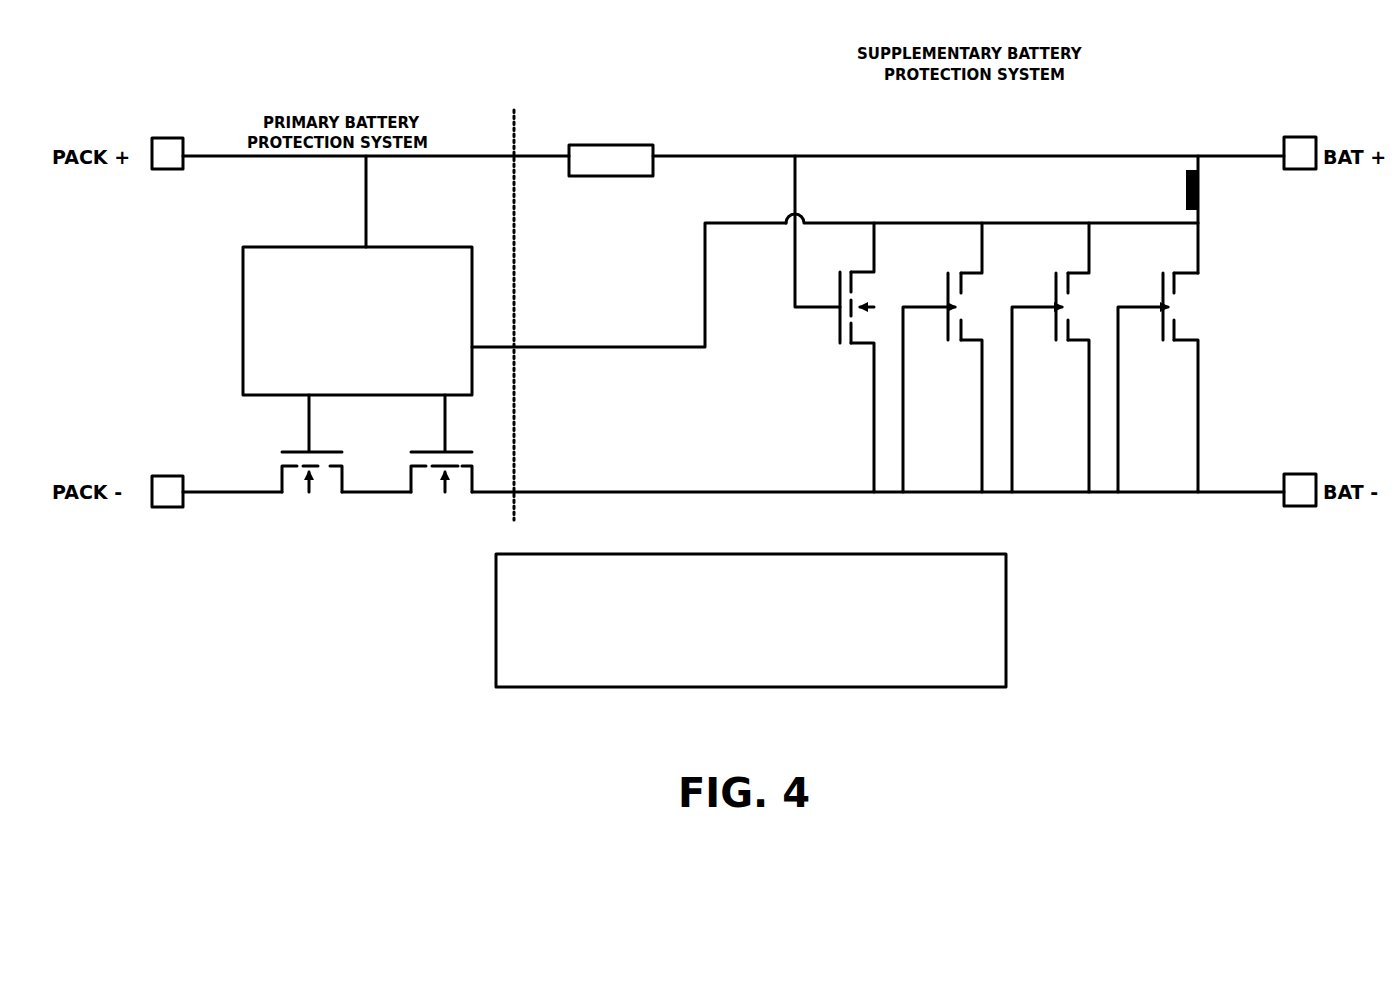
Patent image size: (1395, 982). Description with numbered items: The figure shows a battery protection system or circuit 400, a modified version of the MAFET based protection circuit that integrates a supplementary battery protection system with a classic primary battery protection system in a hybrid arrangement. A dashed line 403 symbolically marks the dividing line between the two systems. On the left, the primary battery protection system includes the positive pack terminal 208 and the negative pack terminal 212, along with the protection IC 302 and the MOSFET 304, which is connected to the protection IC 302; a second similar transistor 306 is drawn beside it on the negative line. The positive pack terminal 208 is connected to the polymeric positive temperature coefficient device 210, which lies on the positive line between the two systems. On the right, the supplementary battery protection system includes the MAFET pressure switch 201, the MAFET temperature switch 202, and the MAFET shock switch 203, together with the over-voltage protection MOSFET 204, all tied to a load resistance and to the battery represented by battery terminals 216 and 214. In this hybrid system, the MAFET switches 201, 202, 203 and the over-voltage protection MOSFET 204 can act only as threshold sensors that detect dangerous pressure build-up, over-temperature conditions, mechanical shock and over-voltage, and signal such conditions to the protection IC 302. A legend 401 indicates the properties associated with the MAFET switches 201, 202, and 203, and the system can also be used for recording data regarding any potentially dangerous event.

The battery protection system or circuit 400 is at (176, 80).
The dashed line 403 is at (515, 128).
The positive pack terminal 208 is at (172, 168).
The negative pack terminal 212 is at (166, 470).
The battery terminal 216 is at (1290, 168).
The battery terminal 214 is at (1291, 470).
The polymeric positive temperature coefficient (PPTC) device 210 is at (604, 147).
The protection IC 302 is at (514, 309).
The MOSFET 304 is at (272, 478).
The charge control FET 306 is at (404, 478).
The over-voltage protection MOSFET 204 is at (853, 268).
The MAFET shock switch 203 is at (963, 268).
The MAFET temperature switch 202 is at (1073, 268).
The MAFET pressure switch 201 is at (1178, 268).
The legend 401 is at (1006, 608).